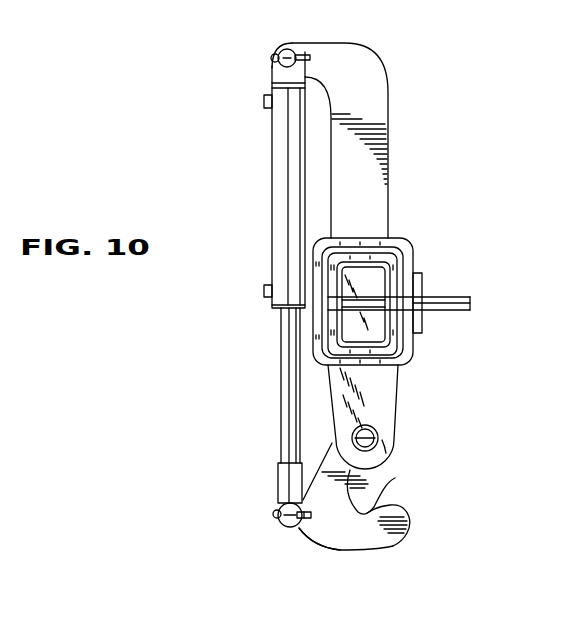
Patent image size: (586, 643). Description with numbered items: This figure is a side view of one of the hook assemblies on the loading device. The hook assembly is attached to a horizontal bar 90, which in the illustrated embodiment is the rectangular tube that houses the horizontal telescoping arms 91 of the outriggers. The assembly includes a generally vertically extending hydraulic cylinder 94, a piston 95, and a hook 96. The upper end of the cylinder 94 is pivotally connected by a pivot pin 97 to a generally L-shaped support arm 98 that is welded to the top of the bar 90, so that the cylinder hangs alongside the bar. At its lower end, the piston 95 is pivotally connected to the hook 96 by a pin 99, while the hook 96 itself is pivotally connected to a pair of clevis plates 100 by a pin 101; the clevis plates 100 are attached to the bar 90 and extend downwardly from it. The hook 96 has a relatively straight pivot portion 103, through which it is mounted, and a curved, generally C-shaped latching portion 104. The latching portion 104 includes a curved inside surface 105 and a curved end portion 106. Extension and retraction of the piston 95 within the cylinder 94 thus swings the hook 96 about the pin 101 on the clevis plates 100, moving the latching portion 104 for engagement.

The horizontal bar 90 is at (408, 236).
The horizontal telescoping arms 91 is at (393, 280).
The hydraulic cylinder 94 is at (271, 168).
The piston 95 is at (281, 355).
The hook 96 is at (383, 538).
The pivot pin 97 is at (284, 48).
The support arm 98 is at (376, 80).
The pin 99 is at (280, 524).
The clevis plates 100 is at (394, 380).
The pin 101 is at (380, 430).
The pivot portion 103 is at (323, 460).
The latching portion 104 is at (345, 537).
The curved inside surface 105 is at (395, 478).
The curved end portion 106 is at (407, 512).